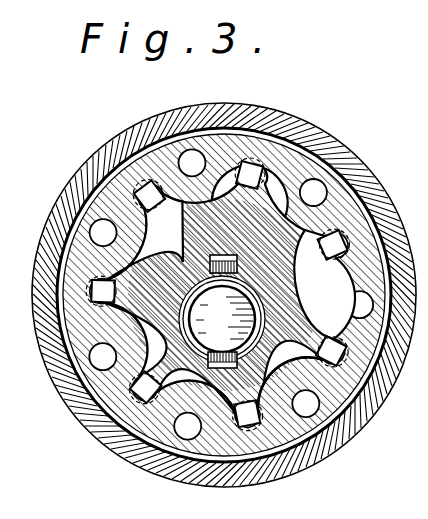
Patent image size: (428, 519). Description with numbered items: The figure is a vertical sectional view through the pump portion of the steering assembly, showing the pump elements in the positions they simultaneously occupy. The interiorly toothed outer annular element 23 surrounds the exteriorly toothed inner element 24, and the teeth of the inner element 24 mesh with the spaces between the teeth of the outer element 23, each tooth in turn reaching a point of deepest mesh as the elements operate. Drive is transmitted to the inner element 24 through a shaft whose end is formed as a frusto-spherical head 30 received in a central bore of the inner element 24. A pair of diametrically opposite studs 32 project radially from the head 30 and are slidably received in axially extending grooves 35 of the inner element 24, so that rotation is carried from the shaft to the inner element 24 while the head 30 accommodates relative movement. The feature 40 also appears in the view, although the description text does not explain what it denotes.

The interiorly toothed outer annular element 23 is at (88, 407).
The exteriorly toothed inner element 24 is at (150, 400).
The frusto-spherical head 30 is at (197, 285).
The studs 32 is at (214, 256).
The axially extending grooves 35 is at (276, 370).
The roller vane 40 is at (322, 311).